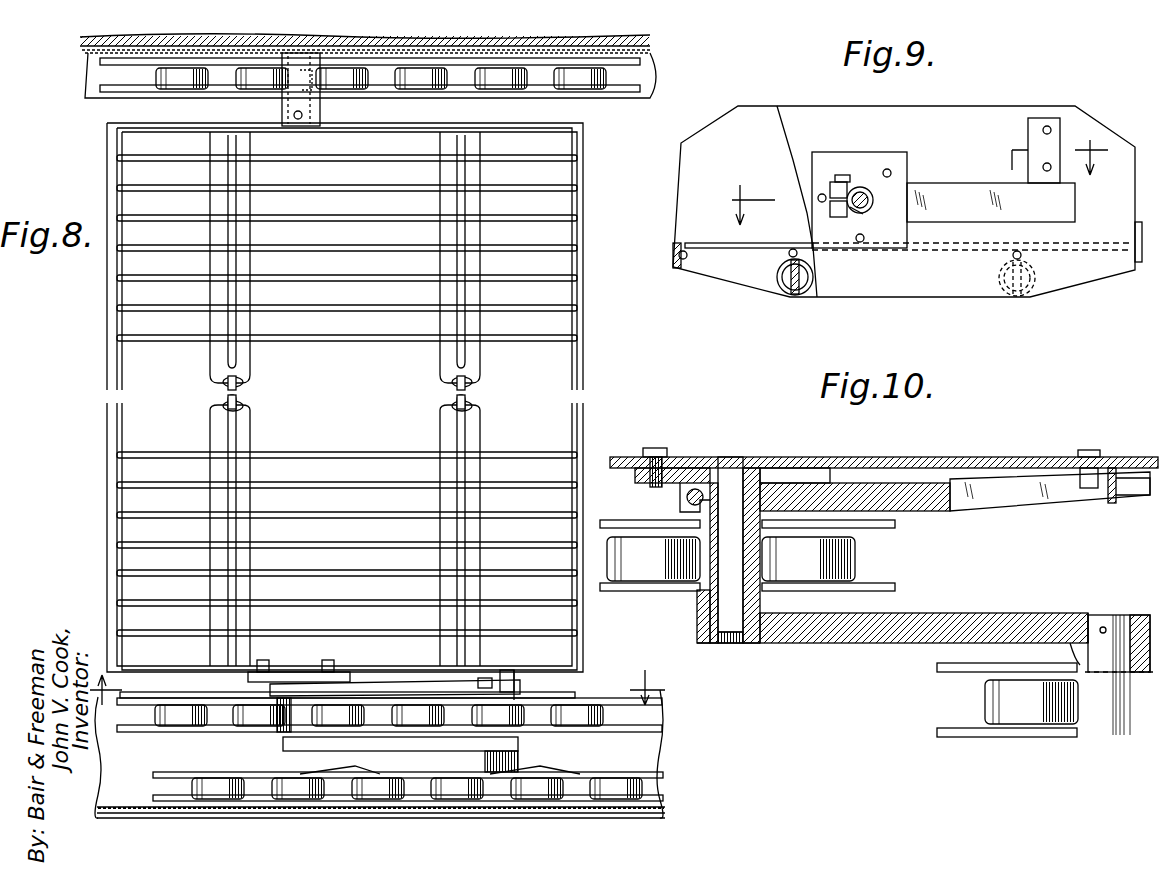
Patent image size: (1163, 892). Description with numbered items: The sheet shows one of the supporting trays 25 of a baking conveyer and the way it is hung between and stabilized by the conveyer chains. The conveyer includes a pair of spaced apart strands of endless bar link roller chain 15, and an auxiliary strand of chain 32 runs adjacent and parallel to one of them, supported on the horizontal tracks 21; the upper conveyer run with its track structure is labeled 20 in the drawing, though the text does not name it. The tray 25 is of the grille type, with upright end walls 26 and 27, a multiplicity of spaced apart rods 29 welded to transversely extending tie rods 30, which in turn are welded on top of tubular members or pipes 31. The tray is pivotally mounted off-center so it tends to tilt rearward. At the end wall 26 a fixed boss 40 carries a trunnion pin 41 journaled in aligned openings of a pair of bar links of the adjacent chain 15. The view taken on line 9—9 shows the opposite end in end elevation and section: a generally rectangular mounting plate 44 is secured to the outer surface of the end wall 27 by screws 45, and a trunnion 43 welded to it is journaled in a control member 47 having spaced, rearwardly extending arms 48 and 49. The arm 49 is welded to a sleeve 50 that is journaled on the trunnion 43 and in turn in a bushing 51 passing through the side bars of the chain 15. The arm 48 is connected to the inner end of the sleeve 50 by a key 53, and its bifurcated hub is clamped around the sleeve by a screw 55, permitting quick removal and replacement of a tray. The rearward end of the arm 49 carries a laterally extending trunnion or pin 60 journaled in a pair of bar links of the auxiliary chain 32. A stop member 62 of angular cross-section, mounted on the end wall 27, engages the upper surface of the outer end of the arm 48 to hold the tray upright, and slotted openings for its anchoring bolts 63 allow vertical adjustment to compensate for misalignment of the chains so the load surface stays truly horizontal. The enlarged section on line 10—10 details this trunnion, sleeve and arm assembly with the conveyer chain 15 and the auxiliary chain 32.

In FIG. 8, the section line 9— 9 is at (387, 699).
In FIG. 9, the section line 10— 10 is at (919, 182).
In FIG. 8, the endless chain 15 is at (538, 78).
In FIG. 10, the endless chain 15 is at (889, 583).
In FIG. 8, the upper conveyor 20 is at (640, 88).
In FIG. 8, the horizontal tracks 21 is at (658, 728).
In FIG. 8, the supporting tray 25 is at (592, 362).
In FIG. 9, the supporting tray 25 is at (692, 174).
In FIG. 8, the end wall 26 is at (414, 70).
In FIG. 8, the end wall 27 is at (528, 674).
In FIG. 9, the end wall 27 is at (978, 115).
In FIG. 10, the end wall 27 is at (884, 462).
In FIG. 8, the rods 29 is at (372, 318).
In FIG. 9, the rods 29 is at (742, 248).
In FIG. 8, the tie rods 30 is at (238, 438).
In FIG. 9, the tie rods 30 is at (800, 255).
In FIG. 8, the tubular members 31 is at (244, 412).
In FIG. 9, the tubular members 31 is at (780, 288).
In FIG. 8, the auxiliary strand of chain 32 is at (568, 766).
In FIG. 10, the auxiliary strand of chain 32 is at (958, 746).
In FIG. 8, the fixed boss 40 is at (318, 108).
In FIG. 8, the trunnion pin 41 is at (298, 80).
In FIG. 9, the trunnion 43 is at (863, 214).
In FIG. 10, the trunnion 43 is at (732, 470).
In FIG. 8, the mounting plate 44 is at (290, 680).
In FIG. 9, the mounting plate 44 is at (908, 160).
In FIG. 10, the mounting plate 44 is at (680, 468).
In FIG. 8, the screws 45 is at (262, 672).
In FIG. 9, the screws 45 is at (850, 195).
In FIG. 10, the screws 45 is at (655, 448).
In FIG. 8, the control member 47 is at (525, 757).
In FIG. 10, the control member 47 is at (952, 612).
In FIG. 8, the arm 48 is at (385, 688).
In FIG. 9, the arm 48 is at (972, 188).
In FIG. 10, the arm 48 is at (1015, 490).
In FIG. 8, the arm 49 is at (283, 746).
In FIG. 10, the arm 49 is at (1030, 618).
In FIG. 9, the sleeve 50 is at (873, 200).
In FIG. 10, the sleeve 50 is at (740, 645).
In FIG. 8, the bushing 51 is at (280, 718).
In FIG. 10, the bushing 51 is at (760, 550).
In FIG. 10, the key 53 is at (765, 490).
In FIG. 9, the screw 55 is at (846, 175).
In FIG. 10, the screw 55 is at (686, 497).
In FIG. 8, the trunnion pin 60 is at (530, 788).
In FIG. 10, the trunnion pin 60 is at (1098, 622).
In FIG. 8, the stop member 62 is at (512, 686).
In FIG. 9, the stop member 62 is at (1052, 145).
In FIG. 10, the stop member 62 is at (1140, 495).
In FIG. 8, the anchoring bolts 63 is at (498, 664).
In FIG. 9, the anchoring bolts 63 is at (1045, 170).
In FIG. 10, the anchoring bolts 63 is at (1085, 490).